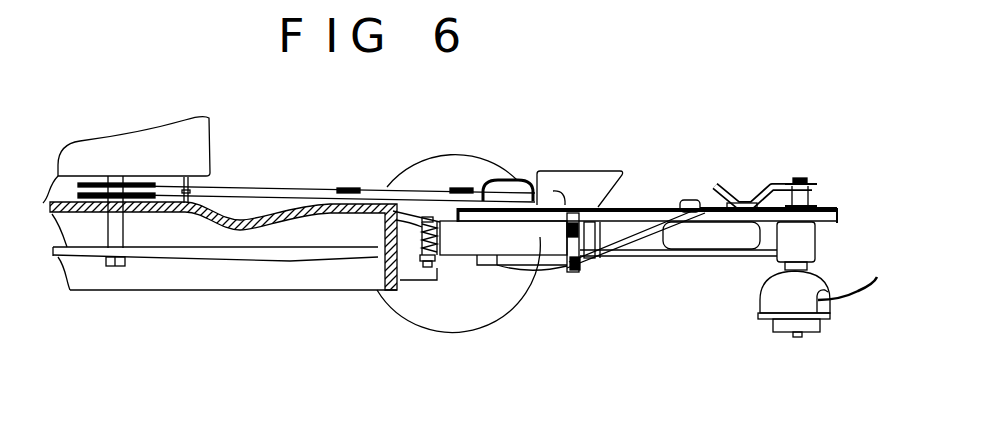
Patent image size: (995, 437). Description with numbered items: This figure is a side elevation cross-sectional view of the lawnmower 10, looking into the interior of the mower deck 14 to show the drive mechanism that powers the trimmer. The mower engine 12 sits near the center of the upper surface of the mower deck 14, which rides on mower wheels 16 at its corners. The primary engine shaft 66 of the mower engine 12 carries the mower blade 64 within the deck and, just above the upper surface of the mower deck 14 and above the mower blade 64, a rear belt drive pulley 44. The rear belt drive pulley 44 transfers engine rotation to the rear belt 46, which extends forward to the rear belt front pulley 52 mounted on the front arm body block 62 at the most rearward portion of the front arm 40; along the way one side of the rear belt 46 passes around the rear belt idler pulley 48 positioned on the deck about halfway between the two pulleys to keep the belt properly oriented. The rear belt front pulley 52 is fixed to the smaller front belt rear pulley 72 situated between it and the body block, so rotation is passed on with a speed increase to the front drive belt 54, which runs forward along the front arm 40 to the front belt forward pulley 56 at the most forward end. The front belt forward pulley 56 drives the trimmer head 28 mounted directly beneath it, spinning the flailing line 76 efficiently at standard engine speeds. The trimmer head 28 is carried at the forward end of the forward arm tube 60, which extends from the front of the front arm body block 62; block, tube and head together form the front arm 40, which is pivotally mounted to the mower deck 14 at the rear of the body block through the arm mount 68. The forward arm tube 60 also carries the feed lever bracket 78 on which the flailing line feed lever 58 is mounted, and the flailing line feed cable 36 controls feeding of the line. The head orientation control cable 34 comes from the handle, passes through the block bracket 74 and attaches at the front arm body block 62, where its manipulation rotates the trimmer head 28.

The lawnmower 10 is at (202, 96).
The mower engine 12 is at (113, 148).
The mower deck 14 is at (188, 290).
The mower wheels 16 is at (440, 318).
The trimmer head 28 is at (775, 330).
The head orientation control cable 34 is at (524, 186).
The flailing line feed cable 36 is at (595, 268).
The front arm 40 is at (706, 158).
The rear belt drive pulley 44 is at (138, 186).
The rear belt 46 is at (268, 190).
The rear belt idler pulley 48 is at (352, 189).
The rear belt front pulley 52 is at (465, 189).
The front drive belt 54 is at (642, 208).
The front belt forward pulley 56 is at (820, 210).
The flailing line feed lever 58 is at (777, 180).
The forward arm tube 60 is at (647, 251).
The front arm body block 62 is at (488, 238).
The mower blade 64 is at (265, 261).
The primary engine shaft 66 is at (105, 235).
The arm mount 68 is at (415, 268).
The front belt rear pulley 72 is at (497, 222).
The block bracket 74 is at (590, 172).
The flailing line 76 is at (846, 300).
The feed lever bracket 78 is at (715, 242).